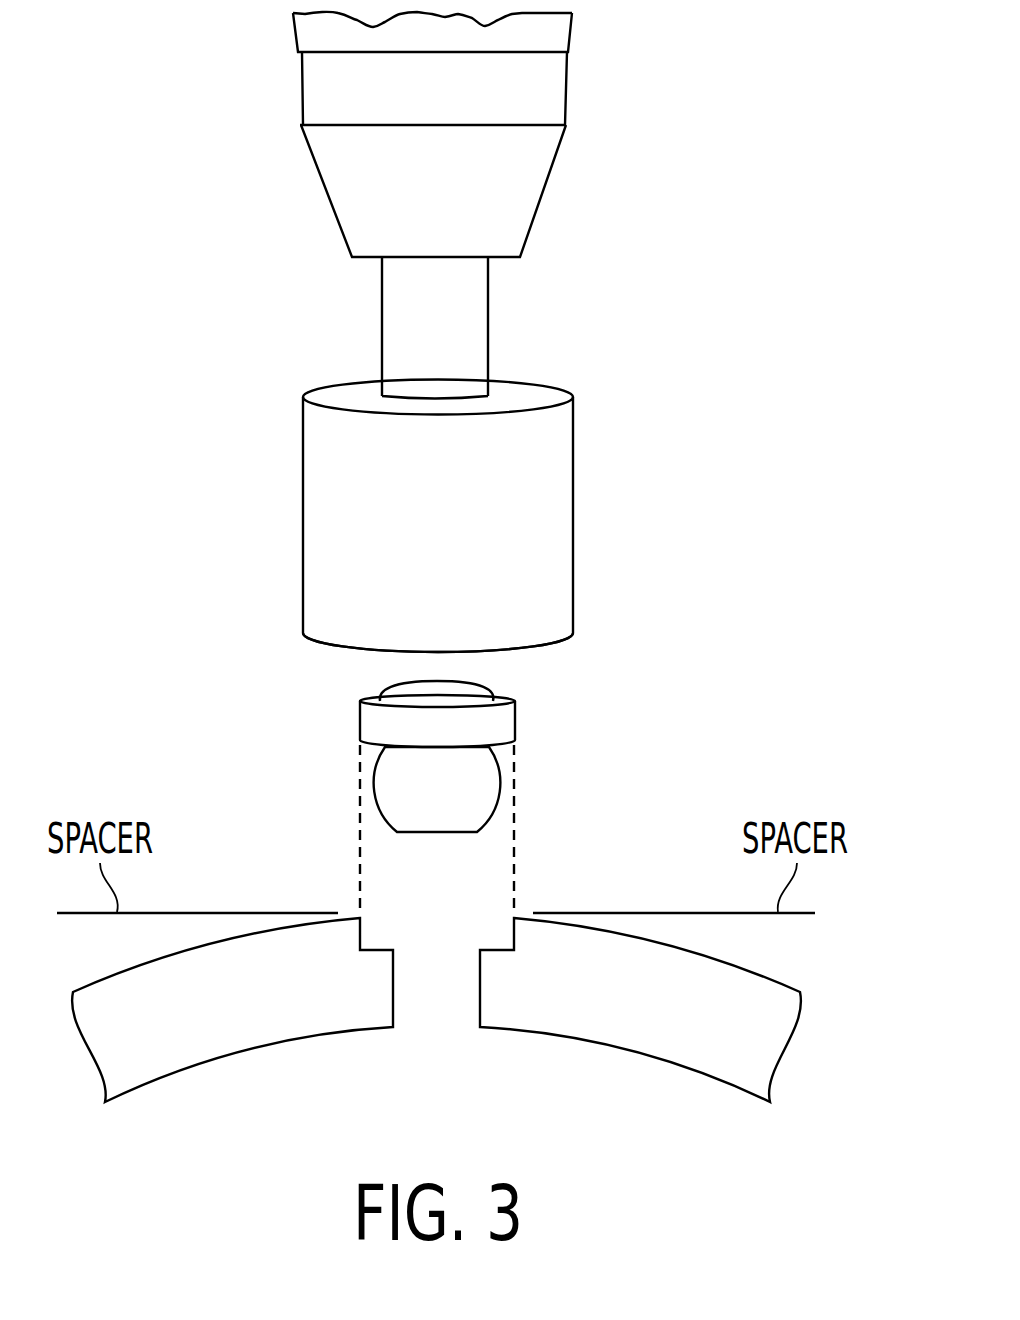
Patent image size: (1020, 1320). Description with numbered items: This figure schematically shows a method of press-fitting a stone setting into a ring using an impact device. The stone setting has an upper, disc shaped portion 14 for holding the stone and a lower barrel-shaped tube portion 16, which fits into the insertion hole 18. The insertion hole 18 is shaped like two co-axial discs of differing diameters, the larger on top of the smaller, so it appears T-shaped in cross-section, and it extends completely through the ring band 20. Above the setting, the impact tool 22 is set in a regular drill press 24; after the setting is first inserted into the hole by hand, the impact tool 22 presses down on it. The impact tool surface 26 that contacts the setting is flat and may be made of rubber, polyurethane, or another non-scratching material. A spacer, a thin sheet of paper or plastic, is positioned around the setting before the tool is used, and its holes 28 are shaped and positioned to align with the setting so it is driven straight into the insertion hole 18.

The upper, disc shaped portion 14 is at (515, 715).
The lower barrel-shaped tube portion 16 is at (500, 785).
The insertion hole 18 is at (436, 1041).
The ring band 20 is at (770, 977).
The impact tool 22 is at (575, 483).
The drill press 24 is at (564, 88).
The impact tool surface 26 is at (321, 644).
The holes 28 is at (348, 904).